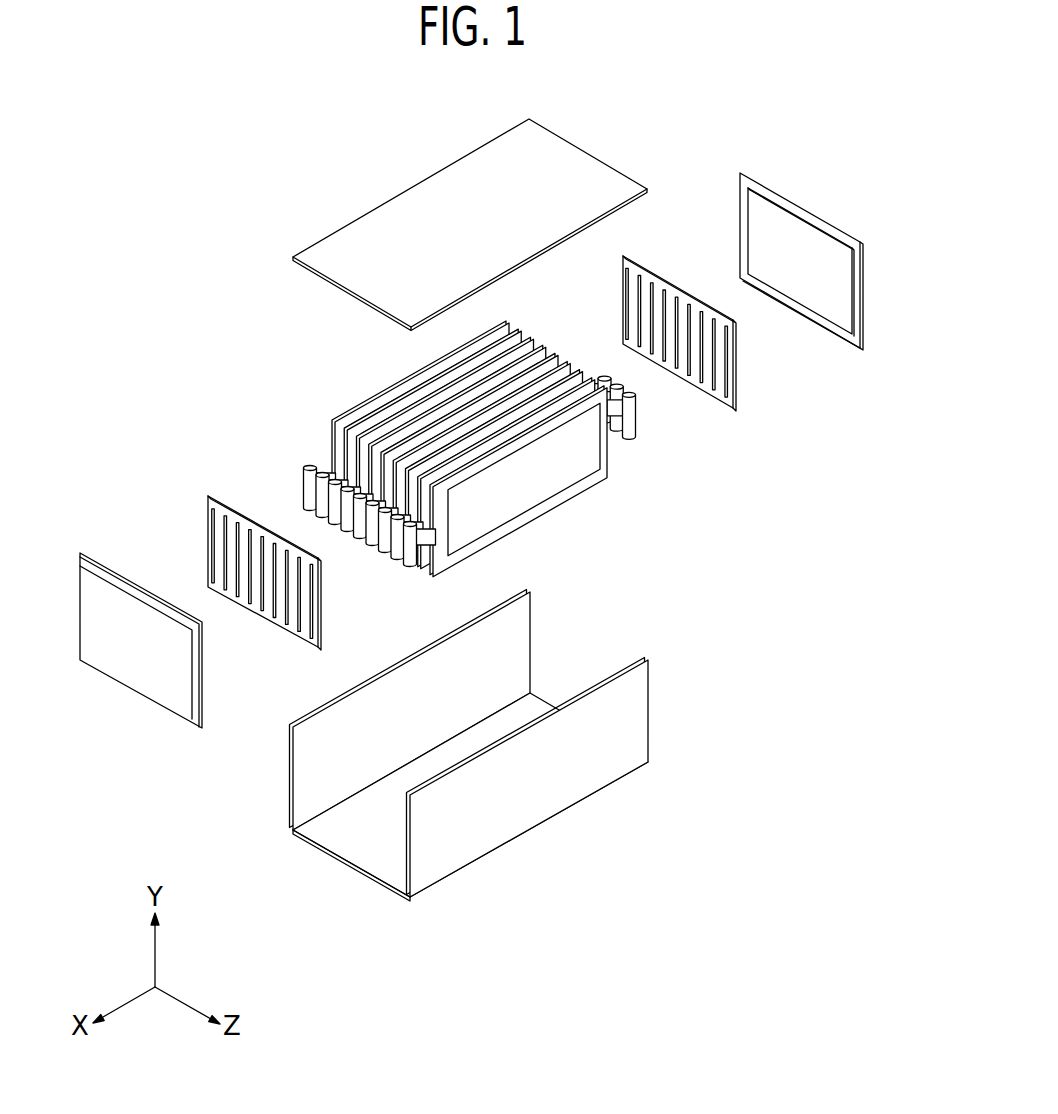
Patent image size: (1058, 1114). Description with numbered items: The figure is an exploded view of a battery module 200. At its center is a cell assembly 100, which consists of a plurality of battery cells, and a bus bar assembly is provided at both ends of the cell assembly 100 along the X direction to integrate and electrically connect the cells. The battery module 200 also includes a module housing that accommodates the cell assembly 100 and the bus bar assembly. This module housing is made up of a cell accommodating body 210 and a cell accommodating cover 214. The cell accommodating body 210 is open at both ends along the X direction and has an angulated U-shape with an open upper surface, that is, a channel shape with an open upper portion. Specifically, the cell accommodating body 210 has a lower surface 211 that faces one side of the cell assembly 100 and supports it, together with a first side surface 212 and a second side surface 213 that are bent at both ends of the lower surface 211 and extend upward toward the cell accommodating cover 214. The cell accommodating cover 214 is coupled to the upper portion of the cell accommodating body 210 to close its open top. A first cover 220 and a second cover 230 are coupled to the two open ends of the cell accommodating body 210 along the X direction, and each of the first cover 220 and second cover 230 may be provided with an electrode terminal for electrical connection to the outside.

The battery module 200 is at (180, 106).
The cell assembly 100 is at (364, 371).
The cell accommodating cover 214 is at (427, 192).
The second cover 230 is at (861, 289).
The first cover 220 is at (80, 612).
The cell accommodating body 210 is at (518, 746).
The lower surface 211 is at (372, 843).
The first side surface 212 is at (648, 708).
The second side surface 213 is at (293, 768).